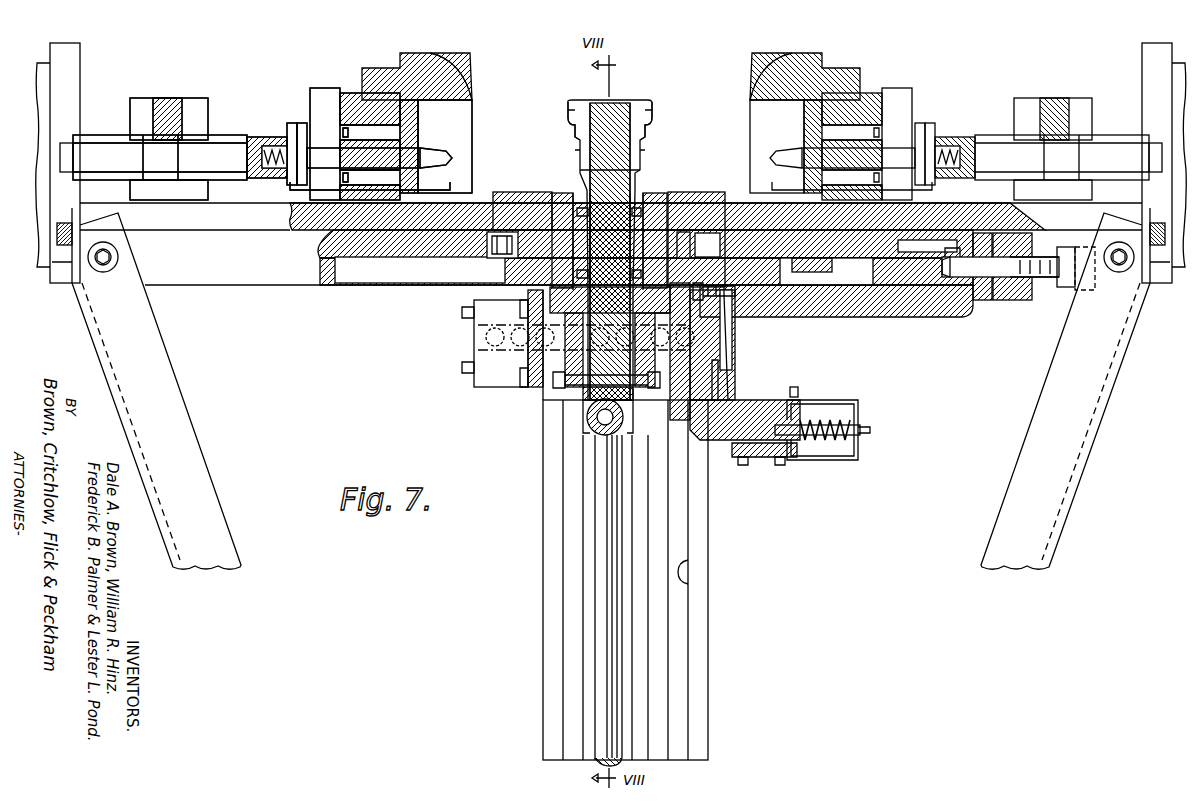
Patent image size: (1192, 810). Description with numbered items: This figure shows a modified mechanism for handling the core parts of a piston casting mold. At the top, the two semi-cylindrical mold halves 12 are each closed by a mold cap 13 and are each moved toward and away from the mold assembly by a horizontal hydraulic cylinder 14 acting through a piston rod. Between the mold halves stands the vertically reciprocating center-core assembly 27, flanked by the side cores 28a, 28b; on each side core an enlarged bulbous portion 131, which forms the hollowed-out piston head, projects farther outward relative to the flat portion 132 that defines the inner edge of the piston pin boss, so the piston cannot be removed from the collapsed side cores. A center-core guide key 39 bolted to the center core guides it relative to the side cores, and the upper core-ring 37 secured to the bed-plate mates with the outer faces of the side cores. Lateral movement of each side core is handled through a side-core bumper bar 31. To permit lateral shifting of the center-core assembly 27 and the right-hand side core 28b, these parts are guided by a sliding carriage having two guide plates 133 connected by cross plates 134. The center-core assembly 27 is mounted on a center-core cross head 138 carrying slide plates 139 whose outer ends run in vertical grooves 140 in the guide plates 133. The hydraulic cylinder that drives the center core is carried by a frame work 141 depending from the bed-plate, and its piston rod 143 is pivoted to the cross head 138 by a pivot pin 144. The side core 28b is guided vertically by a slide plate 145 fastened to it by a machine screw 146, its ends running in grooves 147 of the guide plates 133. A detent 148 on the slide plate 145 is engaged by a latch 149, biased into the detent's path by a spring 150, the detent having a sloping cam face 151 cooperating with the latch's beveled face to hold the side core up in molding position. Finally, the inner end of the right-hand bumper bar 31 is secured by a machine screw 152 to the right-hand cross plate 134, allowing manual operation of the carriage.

The mold half 12 is at (348, 92).
The mold cap 13 is at (425, 56).
The horizontal hydraulic cylinder 14 is at (38, 62).
The center-core assembly 27 is at (633, 92).
The side core 28a is at (562, 100).
The side core 28b is at (656, 98).
The side-core bumper bar 31 is at (948, 310).
The upper core-ring 37 is at (510, 192).
The center-core guide key 39 is at (560, 197).
The enlarged bulbous portion 131 is at (567, 116).
The flat portion 132 is at (580, 155).
The guide plate 133 is at (545, 540).
The cross plate 134 is at (535, 390).
The center-core cross head 138 is at (560, 392).
The slide plate 139 is at (587, 400).
The vertical groove 140 is at (570, 480).
The frame work 141 is at (183, 432).
The piston rod 143 is at (598, 658).
The pivot pin 144 is at (590, 412).
The slide plate 145 is at (700, 382).
The machine screw 146 is at (698, 283).
The groove 147 is at (690, 575).
The detent 148 is at (795, 392).
The latch 149 is at (760, 442).
The spring 150 is at (842, 425).
The sloping cam face 151 is at (710, 342).
The machine screw 152 is at (726, 300).